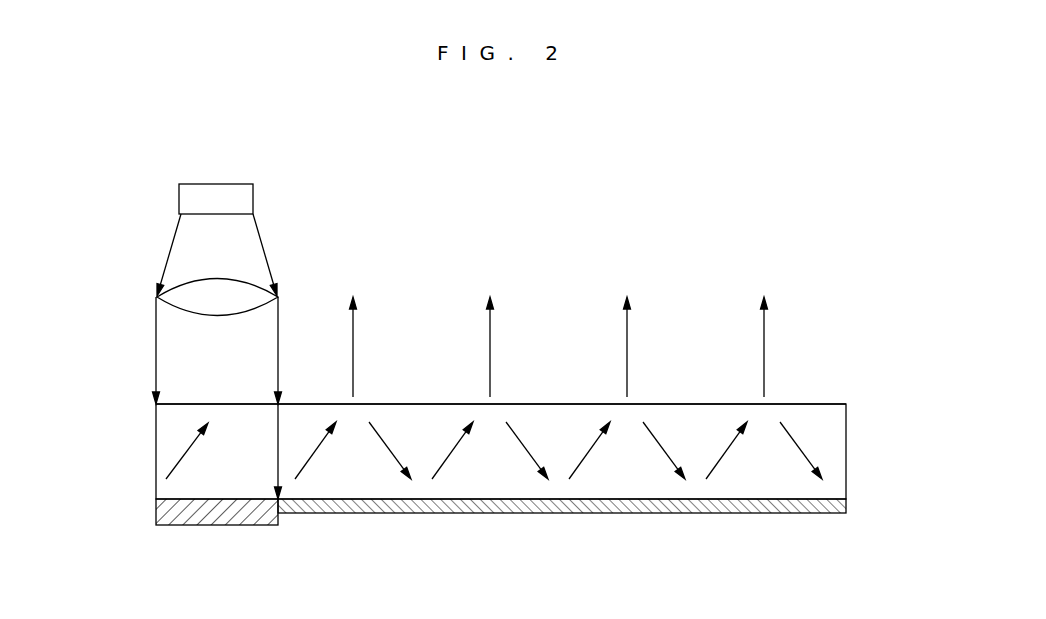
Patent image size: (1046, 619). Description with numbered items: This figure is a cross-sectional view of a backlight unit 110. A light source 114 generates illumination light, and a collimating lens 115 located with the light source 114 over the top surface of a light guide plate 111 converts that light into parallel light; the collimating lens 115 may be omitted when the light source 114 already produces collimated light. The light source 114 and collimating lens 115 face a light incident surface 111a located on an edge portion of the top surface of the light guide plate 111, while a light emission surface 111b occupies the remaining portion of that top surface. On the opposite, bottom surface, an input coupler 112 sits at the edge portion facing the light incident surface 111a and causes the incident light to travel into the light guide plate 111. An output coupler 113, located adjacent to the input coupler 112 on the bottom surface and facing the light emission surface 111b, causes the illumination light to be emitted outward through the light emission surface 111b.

The backlight unit 110 is at (785, 230).
The light guide plate 111 is at (838, 451).
The light incident surface 111a is at (203, 403).
The light emission surface 111b is at (802, 403).
The input coupler 112 is at (217, 527).
The output coupler 113 is at (841, 504).
The light source 114 is at (181, 197).
The collimating lens 115 is at (157, 297).